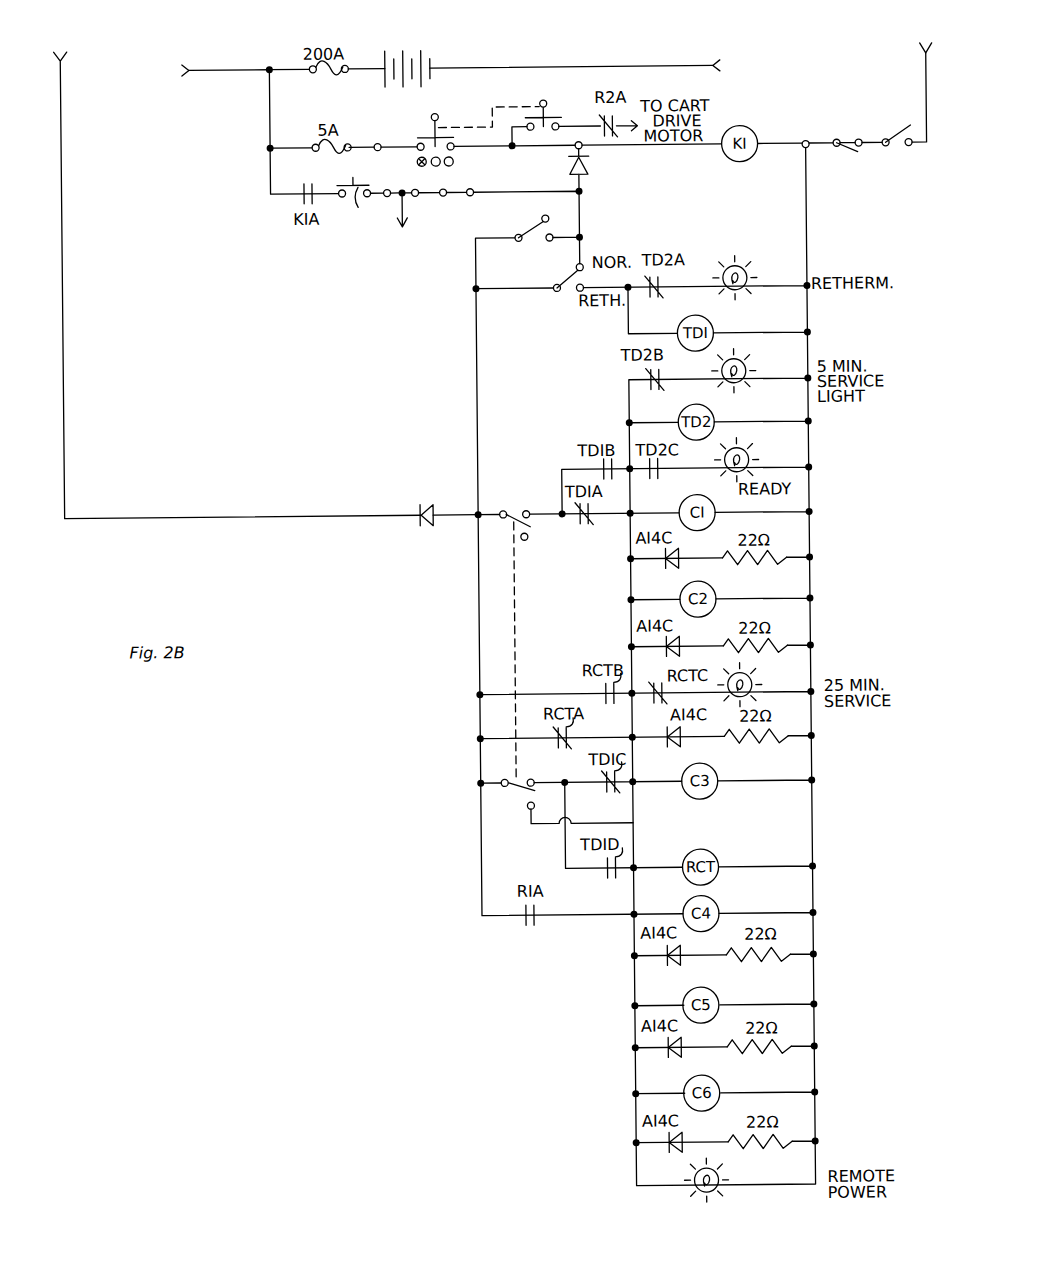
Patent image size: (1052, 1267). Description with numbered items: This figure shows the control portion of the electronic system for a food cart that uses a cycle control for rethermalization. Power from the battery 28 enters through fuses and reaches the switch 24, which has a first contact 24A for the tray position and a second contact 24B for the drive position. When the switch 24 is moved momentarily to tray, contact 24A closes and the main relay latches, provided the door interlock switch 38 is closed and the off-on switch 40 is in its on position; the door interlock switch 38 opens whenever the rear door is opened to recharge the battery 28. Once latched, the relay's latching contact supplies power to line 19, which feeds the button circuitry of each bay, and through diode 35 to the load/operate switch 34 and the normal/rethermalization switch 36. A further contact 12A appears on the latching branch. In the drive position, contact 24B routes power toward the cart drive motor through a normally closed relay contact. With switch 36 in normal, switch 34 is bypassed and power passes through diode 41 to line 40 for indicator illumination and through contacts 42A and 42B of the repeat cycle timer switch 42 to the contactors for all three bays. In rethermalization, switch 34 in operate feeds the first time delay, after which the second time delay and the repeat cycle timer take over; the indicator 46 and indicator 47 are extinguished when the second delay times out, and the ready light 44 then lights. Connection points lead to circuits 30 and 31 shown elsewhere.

The battery 28 is at (428, 44).
The switch 24 is at (464, 108).
The first position contact of switch 24 24A is at (432, 130).
The second position contact of switch 24 24B is at (557, 114).
The diode 35 is at (593, 165).
The line 19 is at (411, 206).
The pushbutton contact 12A is at (354, 202).
The load/operate switch 34 is at (540, 223).
The normal/rethermalization switch 36 is at (568, 303).
The indicator 46 is at (737, 261).
The indicator 47 is at (748, 368).
The ready light 44 is at (750, 457).
The off-on switch 40 is at (901, 128).
The diode 41 is at (430, 503).
The repeat cycle timer switch 42 is at (512, 503).
The contact of switch 42 42A is at (543, 539).
The contact of switch 42 42B is at (561, 801).
The door interlock switch 38 is at (842, 156).
The connection from ref 30 (FIG. 2A) 30 is at (148, 90).
The connection from ref 31 (FIG. 2A) 31 is at (827, 48).